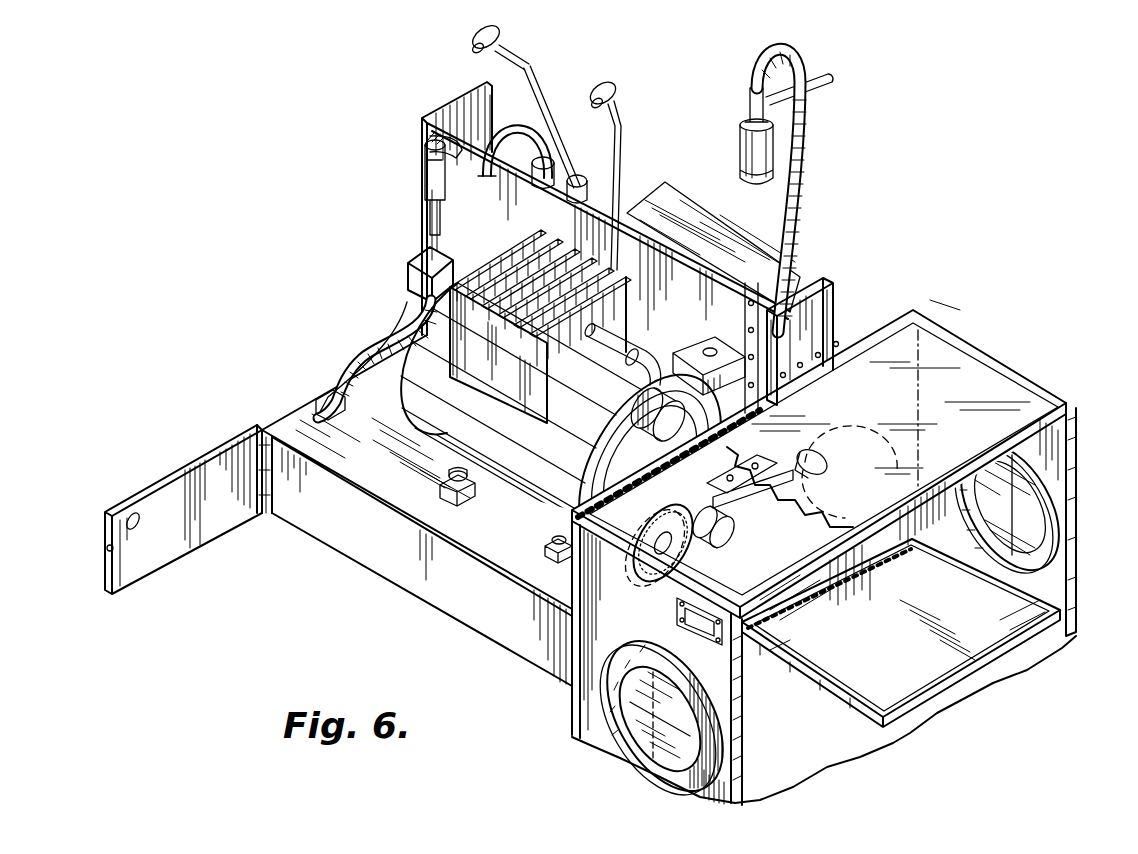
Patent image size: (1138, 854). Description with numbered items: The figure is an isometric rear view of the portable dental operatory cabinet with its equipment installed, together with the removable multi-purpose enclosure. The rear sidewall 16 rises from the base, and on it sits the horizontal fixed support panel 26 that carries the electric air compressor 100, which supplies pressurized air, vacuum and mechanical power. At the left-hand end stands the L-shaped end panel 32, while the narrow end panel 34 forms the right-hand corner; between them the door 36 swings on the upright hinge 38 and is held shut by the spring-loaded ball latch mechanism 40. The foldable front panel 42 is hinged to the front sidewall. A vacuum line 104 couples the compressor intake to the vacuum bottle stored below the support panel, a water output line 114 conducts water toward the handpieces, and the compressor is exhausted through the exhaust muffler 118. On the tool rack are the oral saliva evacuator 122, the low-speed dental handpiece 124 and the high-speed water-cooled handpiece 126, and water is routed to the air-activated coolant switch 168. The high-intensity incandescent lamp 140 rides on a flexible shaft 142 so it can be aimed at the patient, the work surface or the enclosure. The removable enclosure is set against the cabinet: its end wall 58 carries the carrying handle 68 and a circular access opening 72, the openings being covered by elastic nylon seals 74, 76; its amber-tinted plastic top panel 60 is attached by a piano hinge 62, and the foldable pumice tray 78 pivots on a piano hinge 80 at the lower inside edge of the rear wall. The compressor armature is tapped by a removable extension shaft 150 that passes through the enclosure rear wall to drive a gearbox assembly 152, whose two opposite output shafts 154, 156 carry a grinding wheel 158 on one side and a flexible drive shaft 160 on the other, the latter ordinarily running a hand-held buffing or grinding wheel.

The rear sidewall 16 is at (373, 557).
The fixed support panel 26 is at (353, 467).
The L-shaped end panel 32 is at (823, 307).
The end panel 34 is at (477, 97).
The door 36 is at (205, 457).
The hinge 38 is at (257, 482).
The spring-loaded ball latch mechanism 40 is at (122, 553).
The front panel 42 is at (670, 200).
The end wall 58 is at (1057, 440).
The top panel 60 is at (980, 377).
The piano hinge 62 is at (897, 320).
The carrying handle 68 is at (725, 665).
The circular access opening 72 is at (1055, 492).
The elastic nylon seal 74 is at (1043, 527).
The elastic nylon seal 76 is at (640, 737).
The foldable pumice tray 78 is at (977, 640).
The piano hinge 80 is at (888, 547).
The electric air compressor 100 is at (480, 523).
The vacuum line 104 is at (407, 325).
The water output line 114 is at (343, 360).
The exhaust muffler 118 is at (637, 400).
The oral saliva evacuator 122 is at (513, 157).
The low-speed dental handpiece 124 is at (537, 72).
The high-speed water-cooled handpiece 126 is at (615, 120).
The high-intensity incandescent lamp 140 is at (743, 147).
The flexible shaft 142 is at (798, 182).
The removable extension shaft 150 is at (550, 518).
The gearbox assembly 152 is at (773, 500).
The output shaft 154 is at (717, 523).
The output shaft 156 is at (812, 478).
The grinding wheel 158 is at (690, 560).
The flexible drive shaft 160 is at (863, 443).
The air-activated coolant switch 168 is at (427, 177).